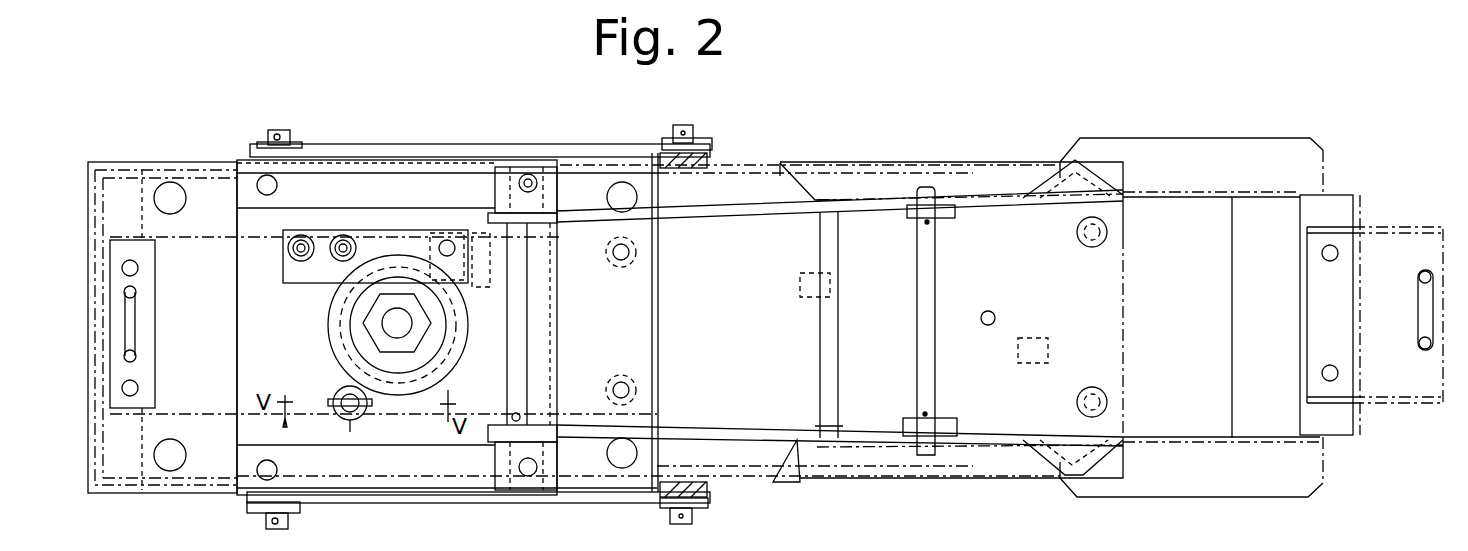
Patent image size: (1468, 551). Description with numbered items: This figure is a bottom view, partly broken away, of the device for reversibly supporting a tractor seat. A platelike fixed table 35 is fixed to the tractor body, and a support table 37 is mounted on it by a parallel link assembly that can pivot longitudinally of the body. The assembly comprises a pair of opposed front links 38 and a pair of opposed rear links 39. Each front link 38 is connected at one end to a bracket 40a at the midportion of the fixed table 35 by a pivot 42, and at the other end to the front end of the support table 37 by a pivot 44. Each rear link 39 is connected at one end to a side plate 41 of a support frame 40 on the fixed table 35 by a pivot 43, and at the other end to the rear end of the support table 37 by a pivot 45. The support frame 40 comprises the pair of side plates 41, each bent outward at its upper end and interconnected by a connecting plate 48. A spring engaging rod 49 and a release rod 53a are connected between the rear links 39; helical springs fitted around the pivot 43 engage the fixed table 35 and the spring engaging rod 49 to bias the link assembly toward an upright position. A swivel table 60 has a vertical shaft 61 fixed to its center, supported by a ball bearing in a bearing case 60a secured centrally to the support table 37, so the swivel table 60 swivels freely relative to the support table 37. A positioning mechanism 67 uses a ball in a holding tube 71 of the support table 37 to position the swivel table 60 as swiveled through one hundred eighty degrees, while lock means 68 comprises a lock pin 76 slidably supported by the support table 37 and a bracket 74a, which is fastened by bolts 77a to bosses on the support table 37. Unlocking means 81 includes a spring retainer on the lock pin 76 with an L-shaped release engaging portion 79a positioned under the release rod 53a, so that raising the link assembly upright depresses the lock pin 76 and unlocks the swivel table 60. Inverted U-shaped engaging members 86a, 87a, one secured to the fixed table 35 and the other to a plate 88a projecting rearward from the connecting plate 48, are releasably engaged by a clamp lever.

The fixed table 35 is at (210, 488).
The support table 37 is at (237, 375).
The front links 38 is at (512, 147).
The rear links 39 is at (793, 212).
The support frame 40 is at (1185, 498).
The bracket 40a is at (712, 160).
The side plates 41 is at (966, 196).
The pivot 42 is at (697, 132).
The pivot 43 is at (932, 285).
The pivot 44 is at (280, 128).
The pivot 45 is at (500, 343).
The connecting plate 48 is at (1355, 215).
The spring engaging rod 49 is at (822, 366).
The release rod 53a is at (553, 362).
The swivel table 60 is at (100, 345).
The bearing case 60a is at (408, 395).
The vertical shaft 61 is at (392, 322).
The positioning mechanism 67 is at (353, 427).
The lock means 68 is at (447, 240).
The holding tube 71 is at (345, 393).
The bracket 74a is at (385, 245).
The lock pin 76 is at (465, 283).
The bolts 77a is at (343, 238).
The release engaging portion 79a is at (532, 256).
The unlocking means 81 is at (520, 285).
The engaging member 86a is at (134, 298).
The engaging member 87a is at (1420, 327).
The plate 88a is at (1397, 405).